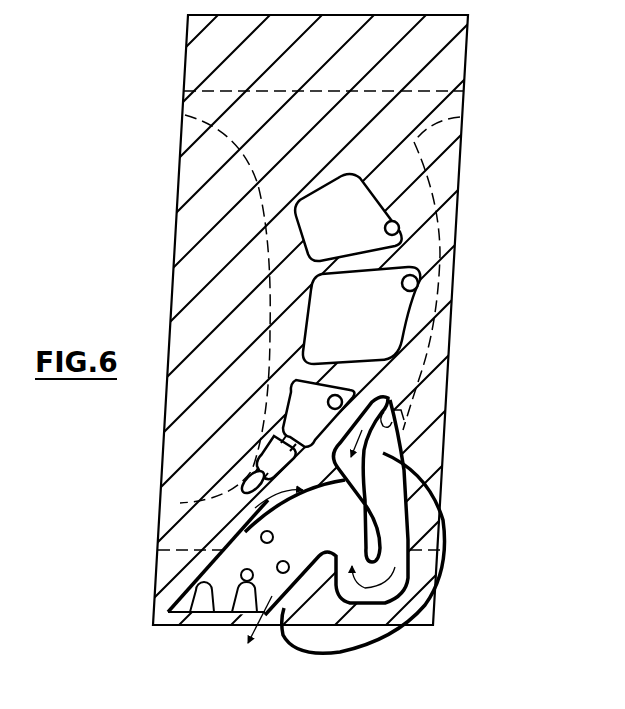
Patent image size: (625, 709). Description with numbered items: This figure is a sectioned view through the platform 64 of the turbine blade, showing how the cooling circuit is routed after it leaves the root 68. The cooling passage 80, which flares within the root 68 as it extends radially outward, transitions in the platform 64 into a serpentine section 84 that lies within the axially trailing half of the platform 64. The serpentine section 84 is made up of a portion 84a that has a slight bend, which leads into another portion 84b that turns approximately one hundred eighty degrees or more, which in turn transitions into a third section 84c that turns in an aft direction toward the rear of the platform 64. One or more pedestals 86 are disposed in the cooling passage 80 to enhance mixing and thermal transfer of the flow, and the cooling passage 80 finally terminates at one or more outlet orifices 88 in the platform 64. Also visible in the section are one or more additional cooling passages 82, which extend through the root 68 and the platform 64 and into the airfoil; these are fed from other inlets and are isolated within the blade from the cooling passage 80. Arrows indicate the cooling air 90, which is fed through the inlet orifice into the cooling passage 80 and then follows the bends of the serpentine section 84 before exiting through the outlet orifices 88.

The platform 64 is at (455, 266).
The root 68 is at (417, 163).
The cooling passage 80 is at (395, 412).
The cooling passages 82 is at (388, 268).
The serpentine section 84 is at (436, 624).
The portion 84a is at (398, 458).
The portion 84b is at (414, 584).
The third section 84c is at (258, 500).
The pedestals 86 is at (262, 540).
The outlet orifices 88 is at (210, 617).
The cooling air 90 is at (366, 437).